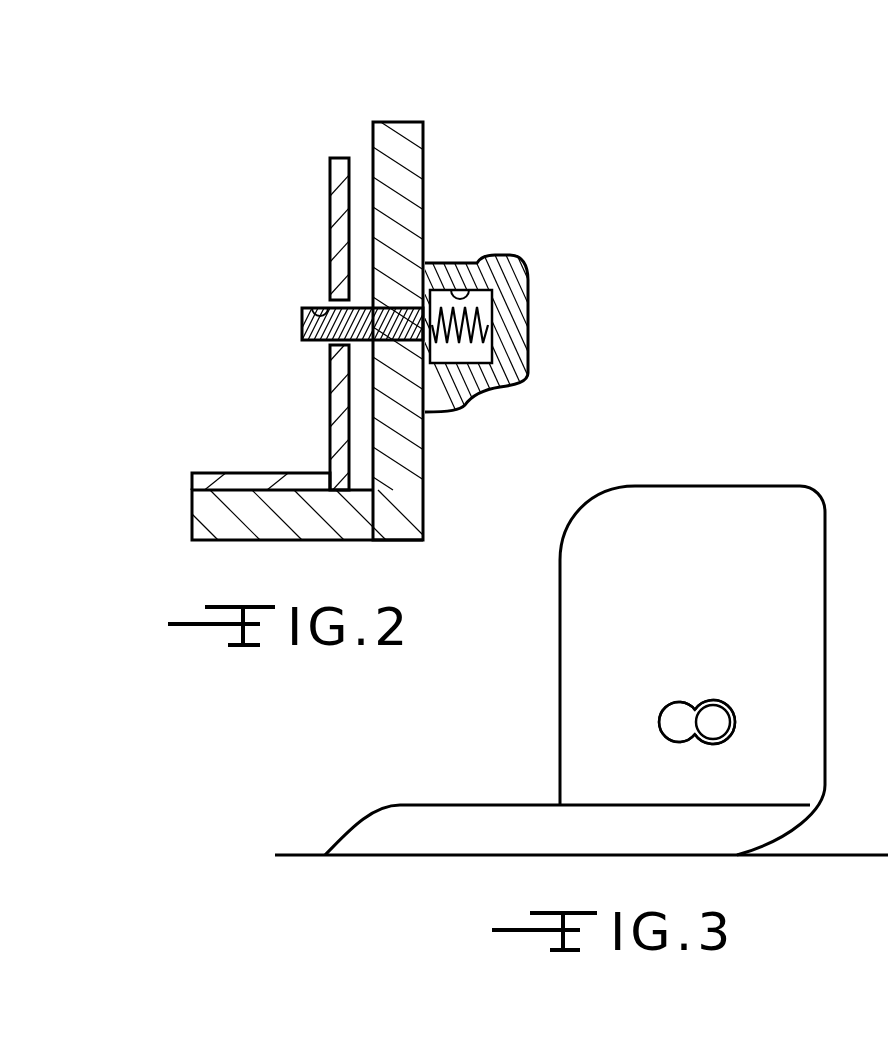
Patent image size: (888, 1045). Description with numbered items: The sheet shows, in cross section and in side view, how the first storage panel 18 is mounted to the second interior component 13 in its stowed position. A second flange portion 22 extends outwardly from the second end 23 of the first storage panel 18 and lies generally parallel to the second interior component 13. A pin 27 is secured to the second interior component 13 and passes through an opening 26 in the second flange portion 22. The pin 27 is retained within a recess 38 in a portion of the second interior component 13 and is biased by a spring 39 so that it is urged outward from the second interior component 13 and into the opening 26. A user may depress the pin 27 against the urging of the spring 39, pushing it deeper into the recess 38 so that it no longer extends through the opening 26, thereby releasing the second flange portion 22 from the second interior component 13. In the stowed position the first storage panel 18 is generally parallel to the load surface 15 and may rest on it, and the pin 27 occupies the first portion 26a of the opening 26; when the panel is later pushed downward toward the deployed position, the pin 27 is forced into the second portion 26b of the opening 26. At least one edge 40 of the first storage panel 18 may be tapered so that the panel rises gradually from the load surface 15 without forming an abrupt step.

In FIG. 2, the second interior component 13 is at (425, 195).
In FIG. 2, the load surface 15 is at (361, 490).
In FIG. 2, the first storage panel 18 is at (290, 195).
In FIG. 3, the first storage panel 18 is at (688, 462).
In FIG. 2, the second flange portion 22 is at (330, 255).
In FIG. 3, the second flange portion 22 is at (738, 486).
In FIG. 2, the second end 23 is at (290, 473).
In FIG. 2, the opening 26 is at (306, 305).
In FIG. 3, the opening 26 is at (680, 716).
In FIG. 3, the first portion of the opening 26a is at (710, 740).
In FIG. 3, the second portion of the opening 26b is at (668, 745).
In FIG. 2, the pin 27 is at (302, 323).
In FIG. 3, the pin 27 is at (714, 722).
In FIG. 2, the recess 38 is at (478, 265).
In FIG. 2, the spring 39 is at (483, 322).
In FIG. 3, the edge 40 is at (371, 808).